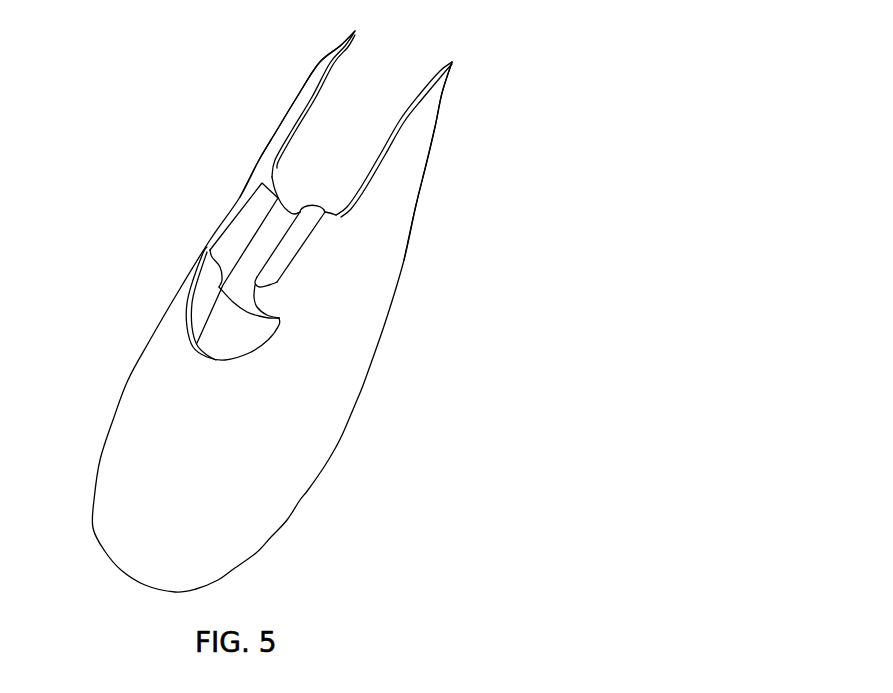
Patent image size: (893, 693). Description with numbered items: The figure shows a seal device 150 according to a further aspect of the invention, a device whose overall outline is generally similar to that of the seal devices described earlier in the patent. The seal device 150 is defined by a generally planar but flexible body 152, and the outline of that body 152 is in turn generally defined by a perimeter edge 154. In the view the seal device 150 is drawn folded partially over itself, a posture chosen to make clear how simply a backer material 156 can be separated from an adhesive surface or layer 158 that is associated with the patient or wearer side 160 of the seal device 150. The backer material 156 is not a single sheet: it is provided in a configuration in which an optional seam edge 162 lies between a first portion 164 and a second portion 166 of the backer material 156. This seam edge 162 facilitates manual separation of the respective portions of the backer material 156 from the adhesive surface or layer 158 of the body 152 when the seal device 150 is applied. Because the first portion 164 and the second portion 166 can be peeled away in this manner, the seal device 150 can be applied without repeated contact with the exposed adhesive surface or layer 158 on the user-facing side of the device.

The seal device 150 is at (480, 35).
The body 152 is at (146, 478).
The perimeter edge 154 is at (399, 122).
The backer material 156 is at (233, 220).
The adhesive surface or layer 158 is at (250, 265).
The patient or wearer side 160 is at (296, 199).
The seam edge 162 is at (247, 356).
The first portion 164 is at (294, 115).
The second portion 166 is at (408, 158).